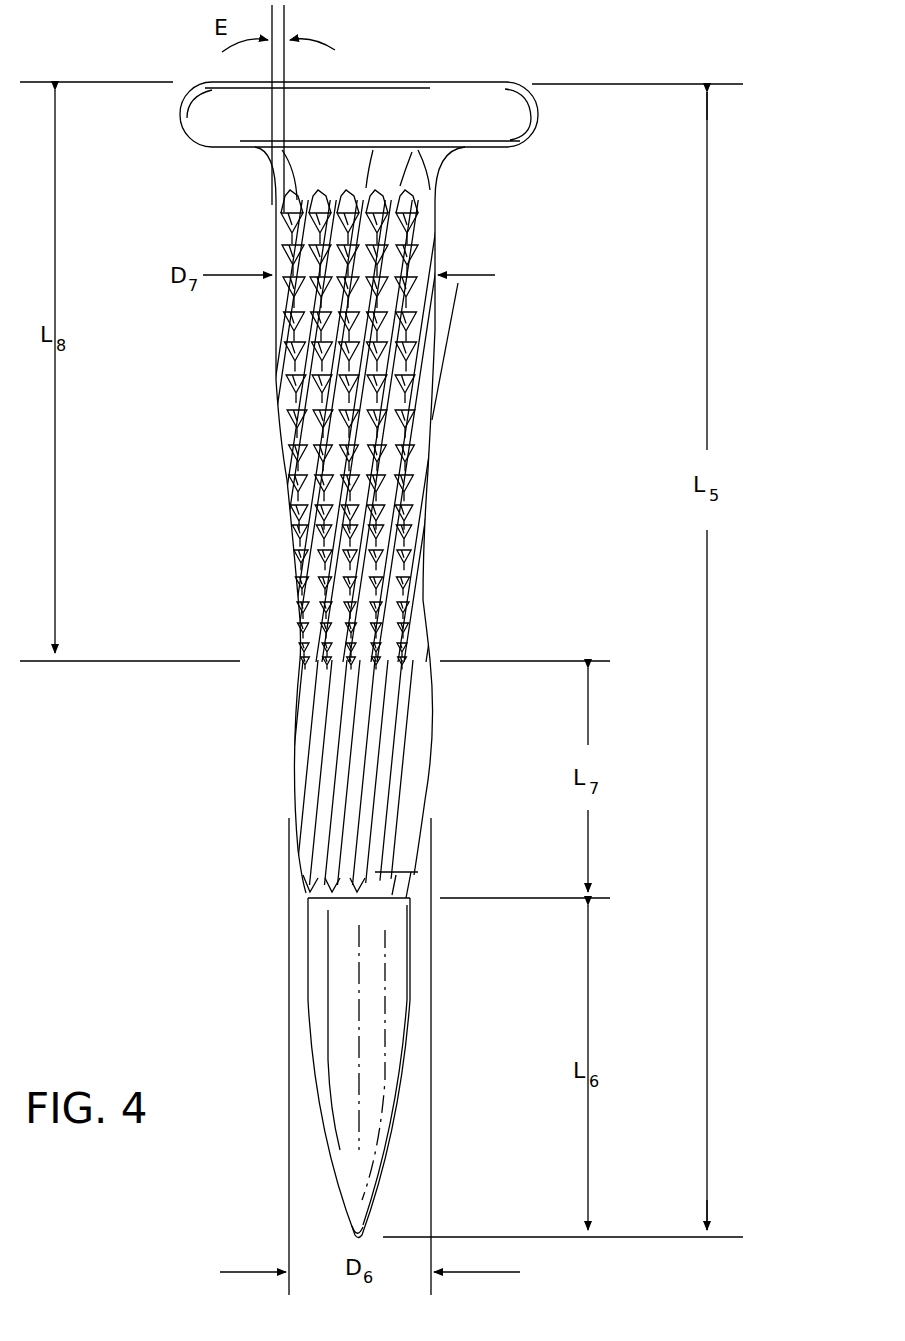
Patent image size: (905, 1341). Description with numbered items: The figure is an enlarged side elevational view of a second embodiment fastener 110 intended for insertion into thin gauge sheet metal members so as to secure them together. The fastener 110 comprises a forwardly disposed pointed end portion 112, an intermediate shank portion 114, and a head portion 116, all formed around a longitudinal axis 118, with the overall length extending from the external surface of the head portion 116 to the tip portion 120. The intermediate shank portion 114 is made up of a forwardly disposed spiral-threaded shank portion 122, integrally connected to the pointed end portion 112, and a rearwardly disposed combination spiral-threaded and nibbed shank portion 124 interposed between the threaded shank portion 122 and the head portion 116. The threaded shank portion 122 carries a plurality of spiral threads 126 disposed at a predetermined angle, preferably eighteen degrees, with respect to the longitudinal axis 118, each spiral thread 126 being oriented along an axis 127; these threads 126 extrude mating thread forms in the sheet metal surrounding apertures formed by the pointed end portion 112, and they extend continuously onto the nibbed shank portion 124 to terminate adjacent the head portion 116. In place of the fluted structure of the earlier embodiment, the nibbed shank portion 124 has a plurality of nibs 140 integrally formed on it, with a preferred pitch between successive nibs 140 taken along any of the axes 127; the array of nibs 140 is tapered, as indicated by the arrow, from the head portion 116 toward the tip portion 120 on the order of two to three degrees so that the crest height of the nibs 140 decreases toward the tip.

The fastener 110 is at (552, 54).
The pointed end portion 112 is at (373, 1068).
The intermediate shank portion 114 is at (285, 472).
The head portion 116 is at (450, 98).
The longitudinal axis 118 is at (358, 995).
The tip portion 120 is at (355, 1235).
The forwardly disposed spiral-threaded shank portion 122 is at (355, 752).
The rearwardly disposed combination spiral-threaded and nibbed shank portion 124 is at (290, 350).
The spiral threads 126 is at (345, 845).
The axis 127 is at (450, 322).
The nibs 140 is at (440, 460).